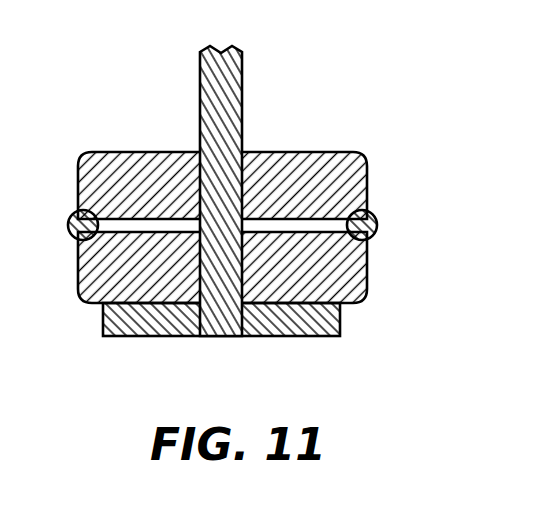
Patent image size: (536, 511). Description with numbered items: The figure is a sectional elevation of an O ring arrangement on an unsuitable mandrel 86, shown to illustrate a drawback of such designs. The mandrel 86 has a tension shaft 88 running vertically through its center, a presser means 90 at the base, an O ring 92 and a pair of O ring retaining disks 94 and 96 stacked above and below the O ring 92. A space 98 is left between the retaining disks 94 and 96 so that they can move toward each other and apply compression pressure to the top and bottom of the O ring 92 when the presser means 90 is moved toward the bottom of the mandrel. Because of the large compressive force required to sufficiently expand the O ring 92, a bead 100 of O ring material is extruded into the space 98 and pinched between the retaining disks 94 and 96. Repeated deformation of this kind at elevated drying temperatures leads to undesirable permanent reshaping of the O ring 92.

The mandrel 86 is at (356, 42).
The tension shaft 88 is at (242, 116).
The presser means 90 is at (302, 337).
The O ring 92 is at (372, 212).
The O ring retaining disk 94 is at (337, 150).
The O ring retaining disk 96 is at (358, 296).
The space 98 is at (170, 225).
The bead 100 is at (135, 227).